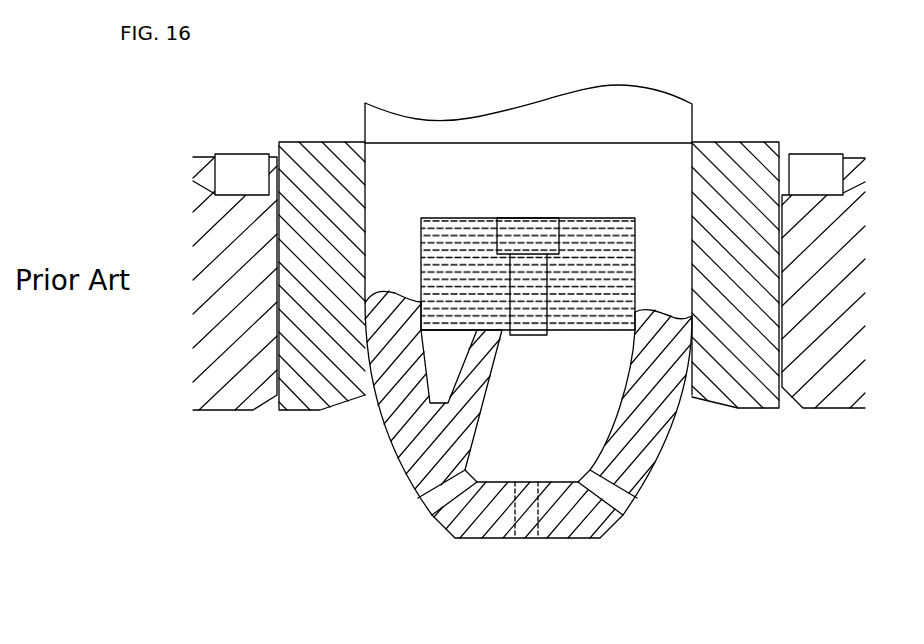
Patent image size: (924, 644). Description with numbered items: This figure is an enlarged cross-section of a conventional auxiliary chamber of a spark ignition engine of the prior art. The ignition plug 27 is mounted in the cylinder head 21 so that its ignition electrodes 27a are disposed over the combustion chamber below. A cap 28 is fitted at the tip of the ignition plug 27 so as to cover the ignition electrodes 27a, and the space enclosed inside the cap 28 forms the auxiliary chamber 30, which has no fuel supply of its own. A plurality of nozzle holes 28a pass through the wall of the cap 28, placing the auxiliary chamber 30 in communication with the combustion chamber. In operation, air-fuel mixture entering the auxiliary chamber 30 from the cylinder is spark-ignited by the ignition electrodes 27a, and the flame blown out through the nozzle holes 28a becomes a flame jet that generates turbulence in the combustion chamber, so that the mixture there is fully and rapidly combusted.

The cylinder head 21 is at (832, 409).
The ignition plug 27 is at (695, 115).
The ignition electrodes 27a is at (525, 336).
The cap 28 is at (380, 423).
The nozzle holes 28a is at (418, 500).
The auxiliary chamber 30 is at (598, 397).